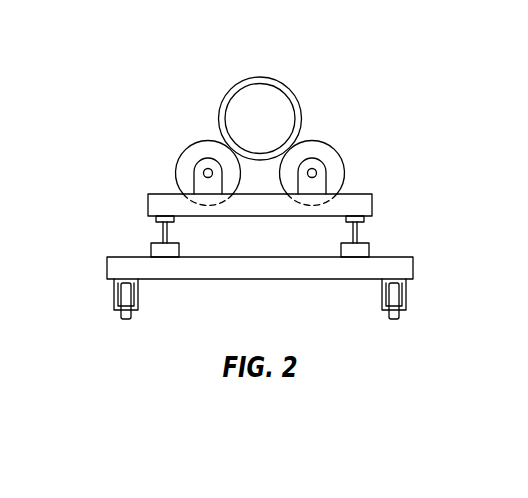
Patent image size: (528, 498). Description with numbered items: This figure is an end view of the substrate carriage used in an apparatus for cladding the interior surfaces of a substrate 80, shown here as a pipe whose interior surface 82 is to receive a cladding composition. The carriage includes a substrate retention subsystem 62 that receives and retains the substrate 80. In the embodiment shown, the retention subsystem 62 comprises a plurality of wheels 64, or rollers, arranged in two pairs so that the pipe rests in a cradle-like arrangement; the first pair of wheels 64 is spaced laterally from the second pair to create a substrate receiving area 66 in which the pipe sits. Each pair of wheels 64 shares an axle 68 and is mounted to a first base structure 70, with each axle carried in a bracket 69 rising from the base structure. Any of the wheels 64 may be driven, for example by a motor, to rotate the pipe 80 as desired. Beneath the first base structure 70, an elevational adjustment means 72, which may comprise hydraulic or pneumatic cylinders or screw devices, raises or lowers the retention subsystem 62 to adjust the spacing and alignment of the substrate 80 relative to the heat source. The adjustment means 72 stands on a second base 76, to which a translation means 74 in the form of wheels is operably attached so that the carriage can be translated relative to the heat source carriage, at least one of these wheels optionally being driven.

The substrate retention subsystem 62 is at (273, 171).
The wheels 64 is at (207, 141).
The substrate receiving area 66 is at (262, 181).
The axle 68 is at (316, 173).
The roller bracket 69 is at (177, 167).
The first base structure 70 is at (148, 205).
The elevational adjustment means 72 is at (163, 228).
The translation means 74 is at (121, 312).
The second base 76 is at (286, 277).
The substrate 80 is at (260, 93).
The interior surface 82 is at (264, 88).